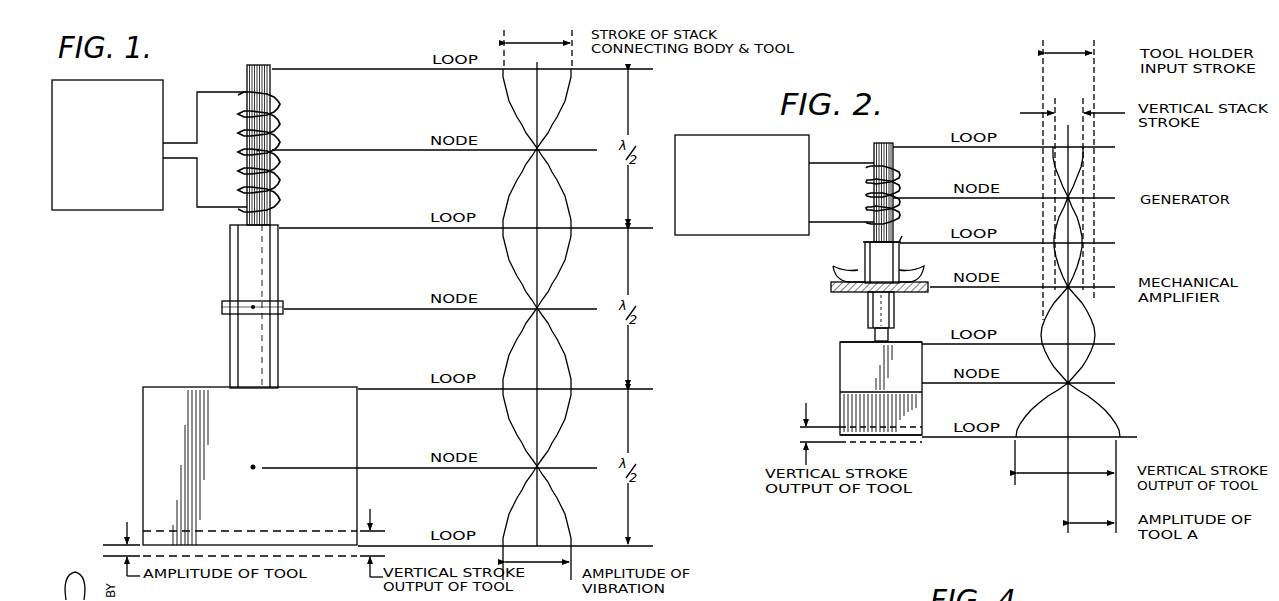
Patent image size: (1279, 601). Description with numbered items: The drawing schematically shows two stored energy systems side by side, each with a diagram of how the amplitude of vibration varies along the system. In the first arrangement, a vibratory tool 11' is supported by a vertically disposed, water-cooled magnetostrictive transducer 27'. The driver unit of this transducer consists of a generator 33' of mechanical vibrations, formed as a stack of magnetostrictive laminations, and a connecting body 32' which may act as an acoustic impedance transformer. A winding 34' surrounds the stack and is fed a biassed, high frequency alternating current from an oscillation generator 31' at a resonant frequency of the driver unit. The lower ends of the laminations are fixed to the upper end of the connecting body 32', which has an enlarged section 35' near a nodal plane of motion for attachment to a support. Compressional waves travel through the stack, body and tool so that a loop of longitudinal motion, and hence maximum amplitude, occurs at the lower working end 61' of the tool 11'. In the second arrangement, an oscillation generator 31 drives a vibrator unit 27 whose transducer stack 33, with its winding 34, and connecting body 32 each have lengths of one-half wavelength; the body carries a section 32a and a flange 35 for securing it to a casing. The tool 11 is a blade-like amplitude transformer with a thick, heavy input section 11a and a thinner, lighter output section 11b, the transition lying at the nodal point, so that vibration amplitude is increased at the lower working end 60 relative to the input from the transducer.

In FIG. 1, the oscillation generator 31' is at (126, 135).
In FIG. 1, the generator of mechanical vibrations 33' is at (282, 145).
In FIG. 1, the winding 34' is at (277, 152).
In FIG. 1, the transducer 27' is at (219, 306).
In FIG. 1, the connecting body 32' is at (276, 306).
In FIG. 1, the enlarged section 35' is at (231, 316).
In FIG. 1, the vibratory tool 11' is at (270, 466).
In FIG. 1, the lower end of tool 61' is at (250, 570).
In FIG. 2, the oscillation generator 31 is at (742, 172).
In FIG. 2, the transducer stack 33 is at (908, 192).
In FIG. 2, the winding 34 is at (904, 192).
In FIG. 2, the vibrator unit 27 is at (852, 291).
In FIG. 2, the connecting body 32 is at (903, 285).
In FIG. 2, the section of connecting body 32a is at (900, 244).
In FIG. 2, the flange 35 is at (888, 300).
In FIG. 2, the tool 11 is at (865, 388).
In FIG. 2, the input section 11a is at (840, 348).
In FIG. 2, the output section 11b is at (840, 405).
In FIG. 2, the lower end of tool 60 is at (911, 438).